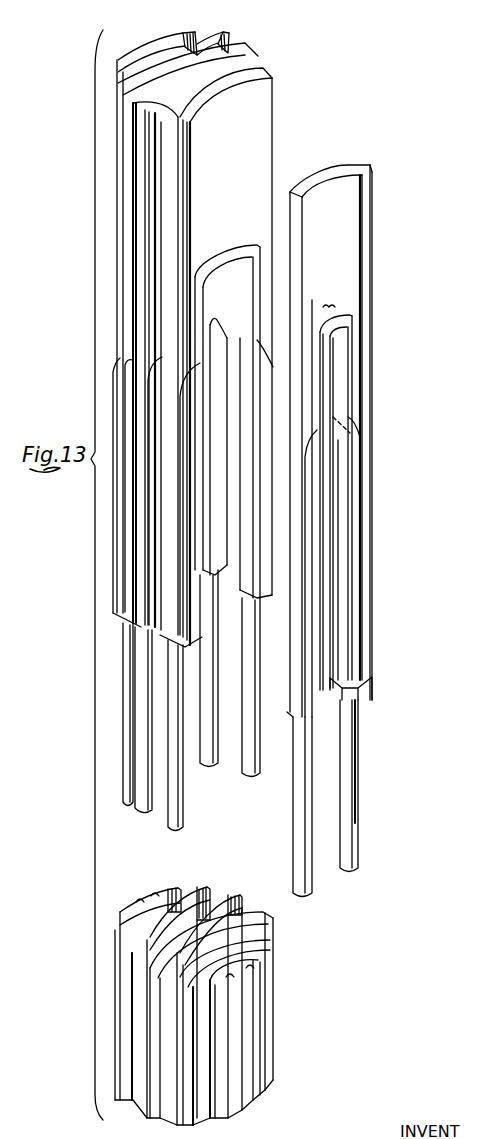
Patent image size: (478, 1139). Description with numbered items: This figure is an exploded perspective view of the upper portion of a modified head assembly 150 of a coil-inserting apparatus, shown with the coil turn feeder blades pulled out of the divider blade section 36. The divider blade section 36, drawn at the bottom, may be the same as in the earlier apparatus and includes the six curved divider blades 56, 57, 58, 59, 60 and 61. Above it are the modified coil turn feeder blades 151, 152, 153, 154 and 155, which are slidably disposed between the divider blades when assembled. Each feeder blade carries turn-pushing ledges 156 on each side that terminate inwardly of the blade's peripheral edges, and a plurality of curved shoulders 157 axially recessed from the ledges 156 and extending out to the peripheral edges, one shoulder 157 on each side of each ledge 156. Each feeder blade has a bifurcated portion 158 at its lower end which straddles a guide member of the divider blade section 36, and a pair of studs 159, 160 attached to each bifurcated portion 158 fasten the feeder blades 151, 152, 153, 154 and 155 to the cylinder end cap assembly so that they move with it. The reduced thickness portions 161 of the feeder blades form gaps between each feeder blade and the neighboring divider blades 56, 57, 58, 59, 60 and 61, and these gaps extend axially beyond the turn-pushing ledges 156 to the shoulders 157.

The coil turn feeder blade 151 is at (185, 33).
The coil turn feeder blade 152 is at (222, 33).
The coil turn feeder blade 153 is at (247, 43).
The coil turn feeder blade 154 is at (270, 72).
The coil turn feeder blade 155 is at (372, 170).
The turn-pushing ledge 156 is at (198, 275).
The curved shoulder 157 is at (157, 363).
The bifurcated portion 158 is at (348, 672).
The stud 159 is at (298, 817).
The stud 160 is at (358, 822).
The reduced thickness portion 161 is at (260, 133).
The modified head assembly 150 is at (477, 750).
The curved divider blade 56 is at (170, 887).
The curved divider blade 57 is at (207, 887).
The curved divider blade 58 is at (240, 890).
The curved divider blade 59 is at (267, 920).
The curved divider blade 60 is at (270, 942).
The curved divider blade 61 is at (257, 967).
The divider blade section 36 is at (292, 1010).